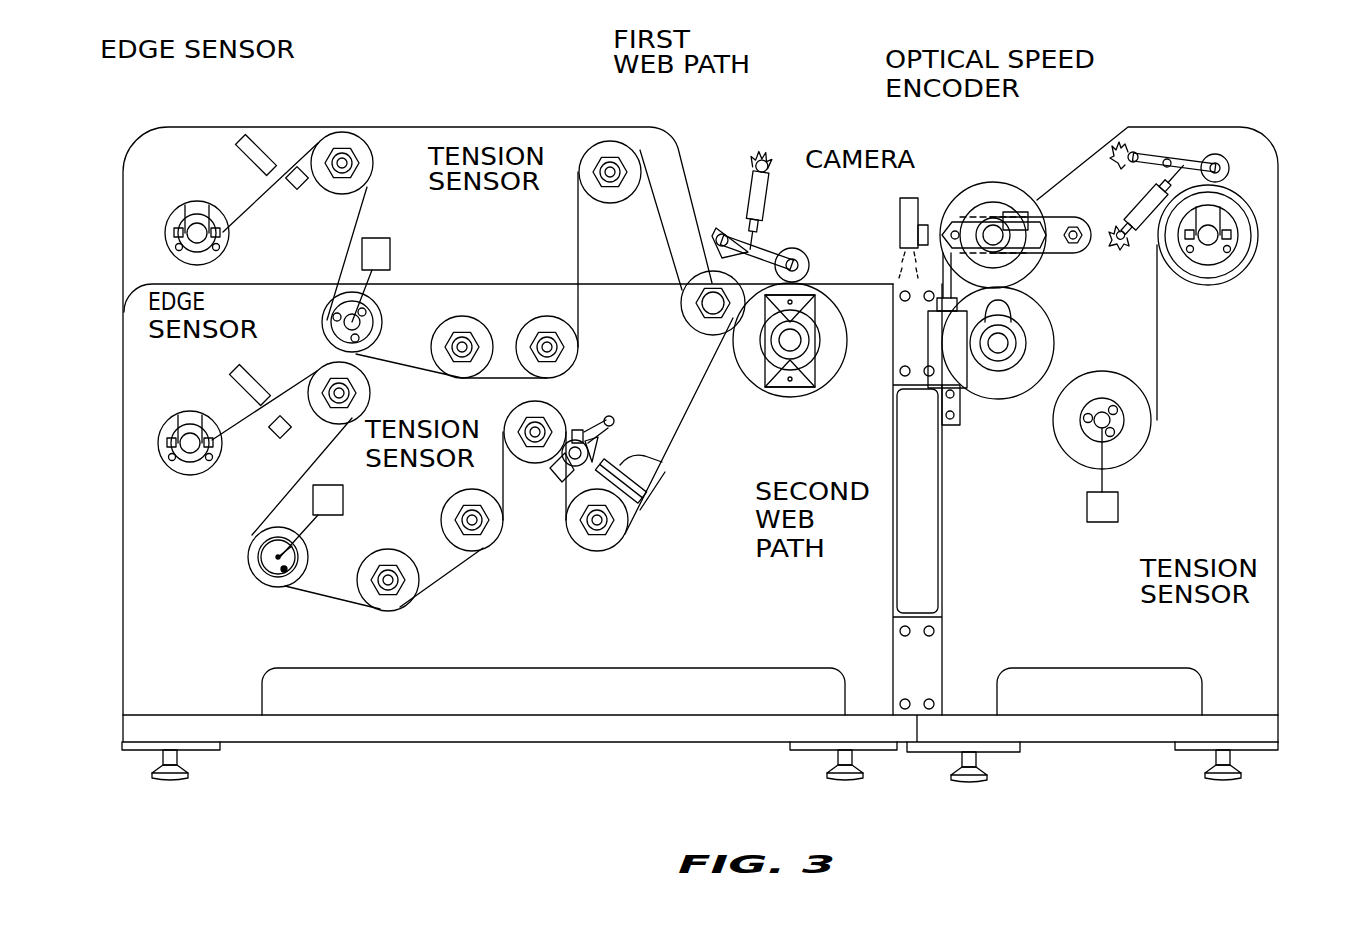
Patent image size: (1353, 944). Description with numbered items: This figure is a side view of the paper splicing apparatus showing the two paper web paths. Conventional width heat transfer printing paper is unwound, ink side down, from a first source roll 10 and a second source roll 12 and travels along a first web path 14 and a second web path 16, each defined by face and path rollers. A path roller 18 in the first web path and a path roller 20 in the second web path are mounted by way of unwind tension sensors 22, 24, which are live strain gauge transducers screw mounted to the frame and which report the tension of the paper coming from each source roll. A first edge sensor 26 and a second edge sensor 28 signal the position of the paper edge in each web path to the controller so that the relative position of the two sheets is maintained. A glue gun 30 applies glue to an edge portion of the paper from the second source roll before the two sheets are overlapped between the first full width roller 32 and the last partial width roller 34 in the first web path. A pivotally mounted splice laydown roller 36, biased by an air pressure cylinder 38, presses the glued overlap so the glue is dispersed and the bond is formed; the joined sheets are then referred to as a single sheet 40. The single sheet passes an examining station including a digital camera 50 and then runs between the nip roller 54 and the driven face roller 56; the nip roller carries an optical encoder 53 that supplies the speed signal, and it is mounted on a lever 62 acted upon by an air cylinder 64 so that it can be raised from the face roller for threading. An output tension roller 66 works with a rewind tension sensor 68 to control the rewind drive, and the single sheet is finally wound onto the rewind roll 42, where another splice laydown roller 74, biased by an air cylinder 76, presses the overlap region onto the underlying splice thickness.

The first source roll 10 is at (168, 223).
The second source roll 12 is at (162, 432).
The first web path 14 is at (668, 150).
The second web path 16 is at (707, 390).
The path roller 18 is at (372, 306).
The path roller 20 is at (253, 558).
The unwind tension sensor 22 is at (392, 238).
The unwind tension sensor 24 is at (347, 492).
The first edge sensor 26 is at (298, 168).
The second edge sensor 28 is at (236, 376).
The glue gun 30 is at (622, 466).
The first full width roller 32 is at (832, 372).
The last partial width roller 34 is at (698, 322).
The splice laydown roller 36 is at (792, 248).
The air pressure cylinder 38 is at (750, 186).
The single sheet 40 is at (836, 284).
The rewind roll 42 is at (1247, 260).
The digital camera 50 is at (900, 230).
The optical encoder 53 is at (1016, 212).
The nip roller 54 is at (982, 186).
The face roller 56 is at (1035, 320).
The lever 62 is at (1060, 217).
The air cylinder 64 is at (961, 410).
The output tension roller 66 is at (1132, 437).
The rewind tension sensor 68 is at (1102, 522).
The splice laydown roller 74 is at (1230, 170).
The air cylinder 76 is at (1134, 214).